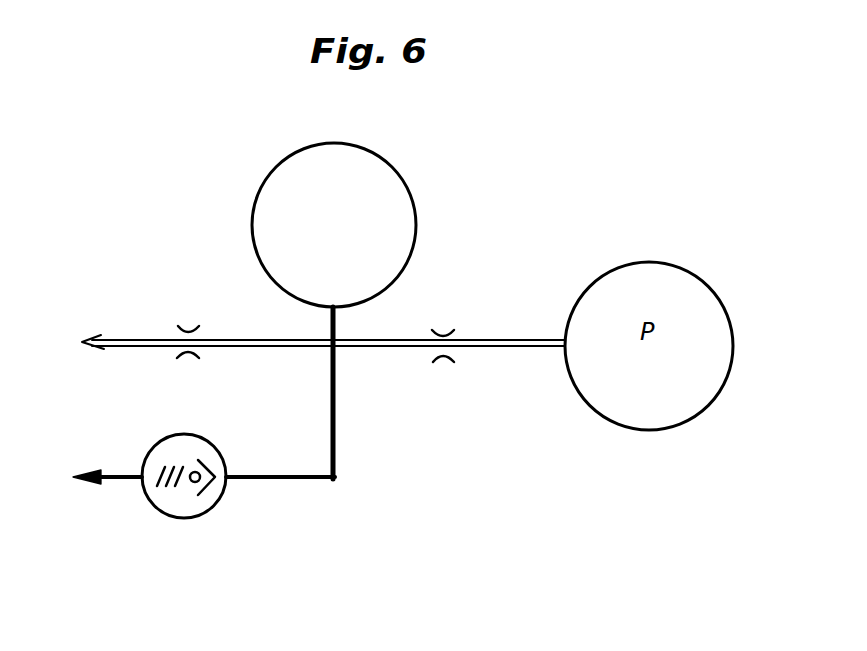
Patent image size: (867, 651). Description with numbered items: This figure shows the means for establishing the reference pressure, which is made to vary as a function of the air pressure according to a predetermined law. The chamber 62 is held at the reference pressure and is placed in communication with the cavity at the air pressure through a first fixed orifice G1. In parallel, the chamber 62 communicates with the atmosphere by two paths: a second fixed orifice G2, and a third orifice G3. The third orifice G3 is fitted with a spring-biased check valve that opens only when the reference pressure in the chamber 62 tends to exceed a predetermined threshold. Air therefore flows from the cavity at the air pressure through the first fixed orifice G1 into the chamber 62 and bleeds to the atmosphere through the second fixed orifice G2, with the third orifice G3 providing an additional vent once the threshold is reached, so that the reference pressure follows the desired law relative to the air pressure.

The chamber 62 is at (412, 200).
The second fixed orifice G2 is at (187, 330).
The first fixed orifice G1 is at (442, 360).
The third orifice G3 is at (200, 518).